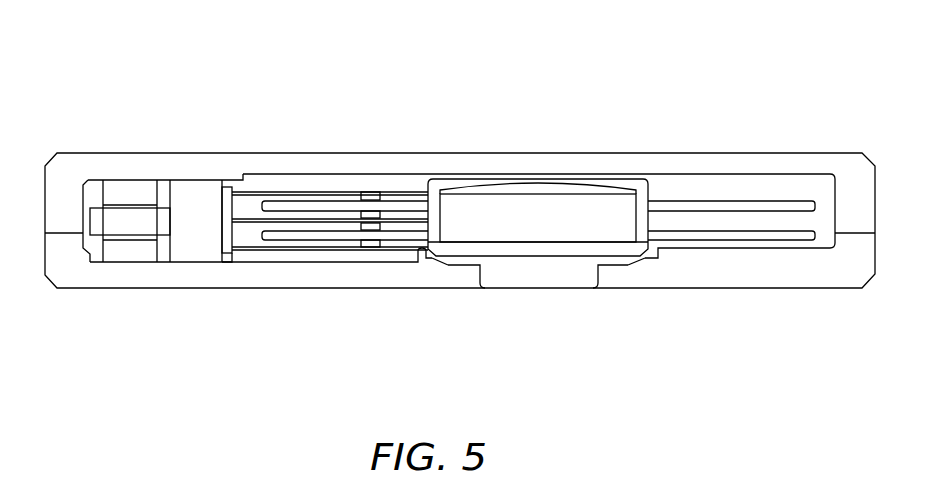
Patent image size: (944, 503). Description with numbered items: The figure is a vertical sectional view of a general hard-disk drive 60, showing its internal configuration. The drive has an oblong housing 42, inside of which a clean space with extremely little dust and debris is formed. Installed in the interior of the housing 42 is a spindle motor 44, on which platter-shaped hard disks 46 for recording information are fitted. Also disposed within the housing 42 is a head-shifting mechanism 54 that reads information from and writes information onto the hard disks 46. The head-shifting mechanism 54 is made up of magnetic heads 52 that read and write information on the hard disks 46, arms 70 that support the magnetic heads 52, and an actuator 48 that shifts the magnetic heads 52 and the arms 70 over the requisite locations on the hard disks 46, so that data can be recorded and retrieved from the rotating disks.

The housing 42 is at (802, 258).
The spindle motor 44 is at (592, 233).
The hard disks 46 is at (748, 247).
The actuator 48 is at (197, 233).
The magnetic heads 52 is at (377, 256).
The head-shifting mechanism 54 is at (250, 180).
The hard-disk drive 60 is at (563, 140).
The arms 70 is at (275, 257).